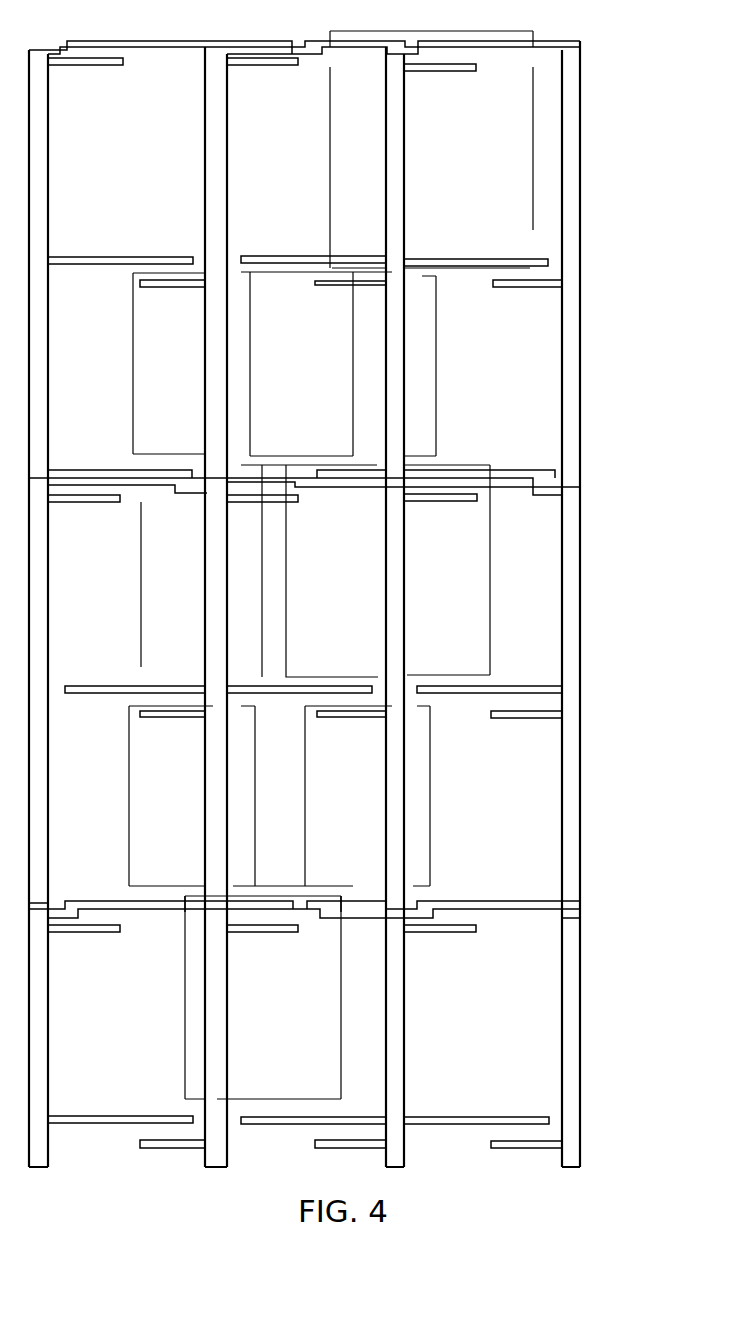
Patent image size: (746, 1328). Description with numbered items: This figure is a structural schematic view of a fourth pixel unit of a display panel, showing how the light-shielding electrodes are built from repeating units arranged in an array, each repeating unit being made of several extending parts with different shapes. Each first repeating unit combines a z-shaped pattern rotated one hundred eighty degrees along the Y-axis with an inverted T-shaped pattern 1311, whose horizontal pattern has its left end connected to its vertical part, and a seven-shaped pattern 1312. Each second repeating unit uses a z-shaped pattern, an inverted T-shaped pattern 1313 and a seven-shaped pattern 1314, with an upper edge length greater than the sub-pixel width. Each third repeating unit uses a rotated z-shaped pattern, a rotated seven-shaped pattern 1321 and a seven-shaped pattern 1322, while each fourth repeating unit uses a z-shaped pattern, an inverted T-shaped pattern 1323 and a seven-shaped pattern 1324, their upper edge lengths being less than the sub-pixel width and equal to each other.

The inverted T-shaped pattern 1311 is at (525, 197).
The 7-shaped pattern 1312 is at (433, 363).
The inverted T-shaped pattern 1313 is at (173, 598).
The 7-shaped pattern 1314 is at (166, 790).
The 7-shaped pattern rotated 180 degrees along the Y-axis 1321 is at (214, 992).
The 7-shaped pattern 1322 is at (166, 365).
The inverted T-shaped pattern 1323 is at (434, 570).
The 7-shaped pattern 1324 is at (419, 822).